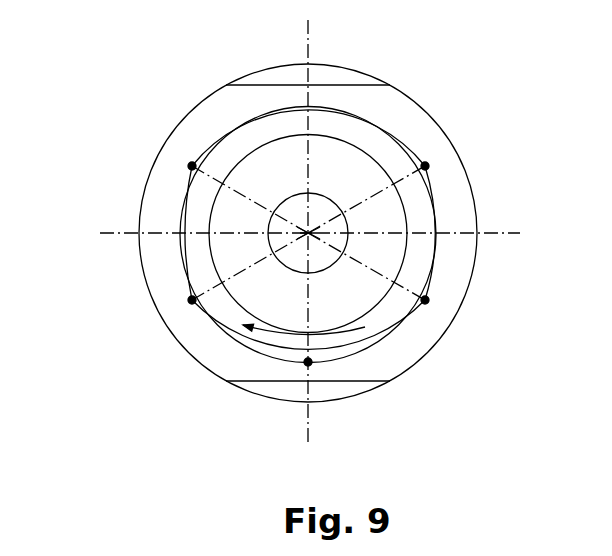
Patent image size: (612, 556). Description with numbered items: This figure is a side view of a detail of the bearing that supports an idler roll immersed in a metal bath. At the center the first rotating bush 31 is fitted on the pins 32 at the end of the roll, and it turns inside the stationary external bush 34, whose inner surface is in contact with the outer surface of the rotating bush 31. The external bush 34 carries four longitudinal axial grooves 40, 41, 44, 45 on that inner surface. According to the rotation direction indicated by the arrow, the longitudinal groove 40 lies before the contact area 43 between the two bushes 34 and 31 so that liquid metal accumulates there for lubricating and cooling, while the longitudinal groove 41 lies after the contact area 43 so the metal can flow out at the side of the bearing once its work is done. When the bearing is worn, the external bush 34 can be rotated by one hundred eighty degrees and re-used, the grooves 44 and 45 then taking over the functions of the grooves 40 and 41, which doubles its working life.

The first rotating bush 31 is at (318, 193).
The pins 32 is at (372, 234).
The external bush 34 is at (251, 233).
The longitudinal groove 40 is at (405, 313).
The longitudinal groove 41 is at (217, 315).
The contact area 43 is at (314, 390).
The longitudinal groove 44 is at (214, 150).
The longitudinal groove 45 is at (404, 153).